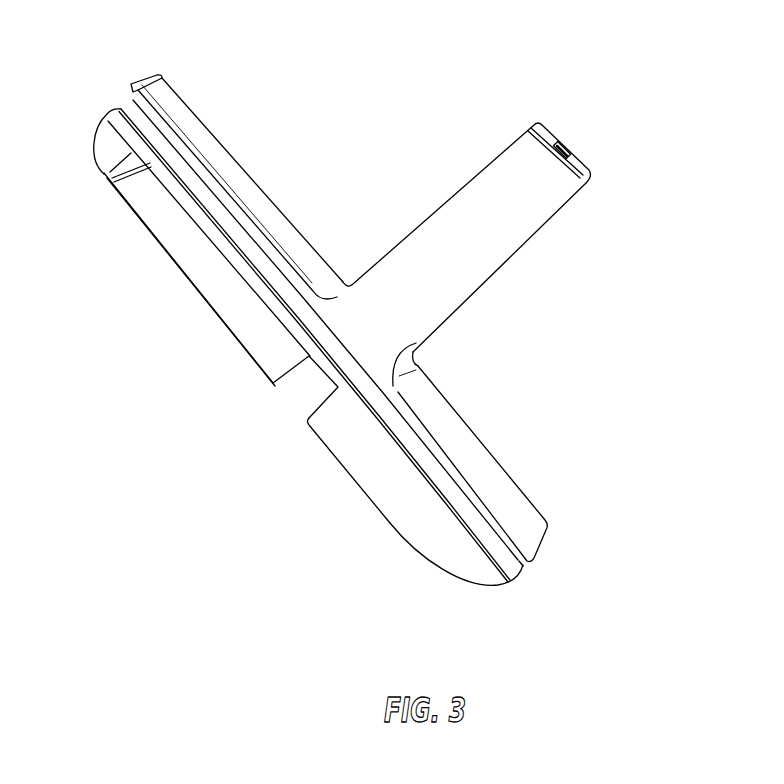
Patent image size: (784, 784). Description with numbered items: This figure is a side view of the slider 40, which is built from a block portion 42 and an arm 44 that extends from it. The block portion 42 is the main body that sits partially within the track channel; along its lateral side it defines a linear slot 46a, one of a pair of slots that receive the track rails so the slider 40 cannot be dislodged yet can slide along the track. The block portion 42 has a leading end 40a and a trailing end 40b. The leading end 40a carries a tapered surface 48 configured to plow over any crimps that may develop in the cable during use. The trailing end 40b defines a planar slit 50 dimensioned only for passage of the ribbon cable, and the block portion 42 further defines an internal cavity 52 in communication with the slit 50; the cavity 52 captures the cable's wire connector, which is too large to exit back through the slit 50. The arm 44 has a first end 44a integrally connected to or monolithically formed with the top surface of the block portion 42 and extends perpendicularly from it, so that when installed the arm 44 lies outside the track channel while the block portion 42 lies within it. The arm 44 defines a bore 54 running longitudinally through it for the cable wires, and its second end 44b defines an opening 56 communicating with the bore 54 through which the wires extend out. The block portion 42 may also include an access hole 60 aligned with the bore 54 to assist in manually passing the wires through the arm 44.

The slider 40 is at (372, 104).
The leading end 40a is at (532, 542).
The trailing end 40b is at (168, 99).
The block portion 42 is at (370, 460).
The arm 44 is at (485, 264).
The first end 44a is at (409, 358).
The second end 44b is at (552, 202).
The linear slot 46a is at (523, 565).
The tapered surface 48 is at (450, 565).
The planar slit 50 is at (108, 121).
The internal cavity 52 is at (237, 288).
The bore 54 is at (572, 139).
The opening 56 is at (573, 150).
The access hole 60 is at (305, 392).